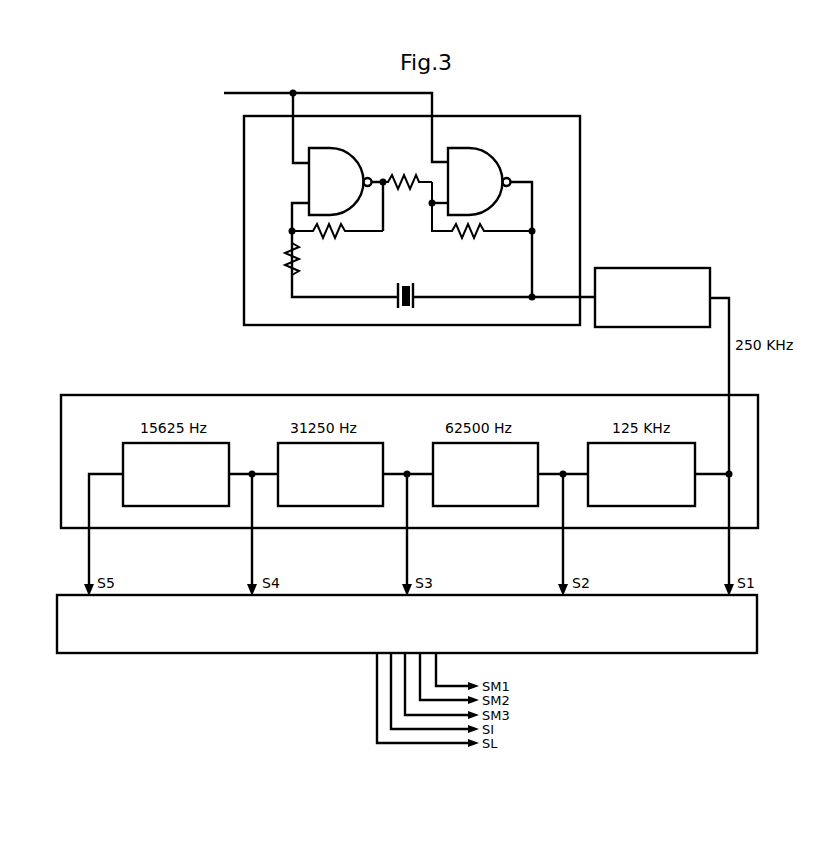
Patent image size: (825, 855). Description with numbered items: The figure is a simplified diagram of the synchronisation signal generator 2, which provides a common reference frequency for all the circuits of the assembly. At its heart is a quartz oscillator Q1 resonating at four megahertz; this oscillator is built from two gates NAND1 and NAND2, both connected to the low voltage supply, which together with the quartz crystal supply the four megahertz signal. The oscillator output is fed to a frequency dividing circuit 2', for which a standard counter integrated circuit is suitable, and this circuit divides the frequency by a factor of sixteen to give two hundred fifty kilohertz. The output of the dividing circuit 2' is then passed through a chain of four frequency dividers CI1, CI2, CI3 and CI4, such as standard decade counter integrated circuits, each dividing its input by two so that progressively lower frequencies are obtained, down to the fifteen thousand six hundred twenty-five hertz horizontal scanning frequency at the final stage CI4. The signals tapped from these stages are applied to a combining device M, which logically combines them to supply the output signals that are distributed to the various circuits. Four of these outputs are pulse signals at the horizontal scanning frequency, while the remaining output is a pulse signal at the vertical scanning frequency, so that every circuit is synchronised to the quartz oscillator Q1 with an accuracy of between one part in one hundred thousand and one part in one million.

The synchronisation generator 2 is at (492, 208).
The frequency dividing circuit 2' is at (680, 297).
The NAND gate NAND1 is at (340, 171).
The NAND gate NAND2 is at (479, 171).
The quartz oscillator Q1 is at (406, 285).
The frequency divider CI1 is at (641, 474).
The frequency divider CI2 is at (485, 474).
The frequency divider CI3 is at (330, 474).
The frequency divider CI4 is at (176, 474).
The combining device M is at (407, 624).